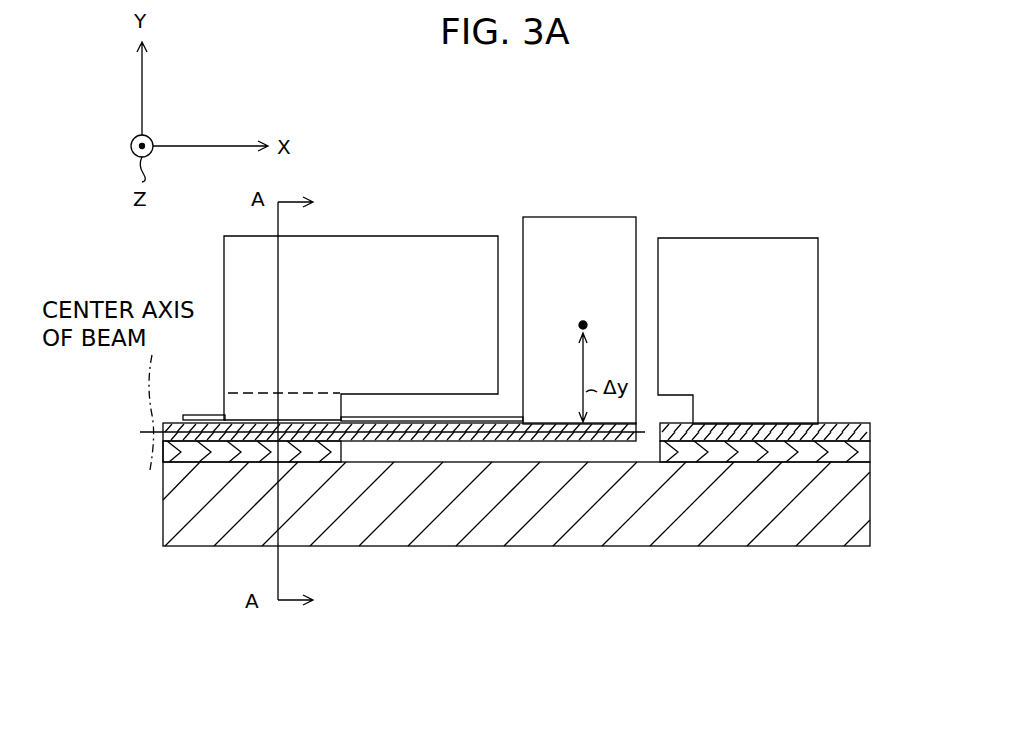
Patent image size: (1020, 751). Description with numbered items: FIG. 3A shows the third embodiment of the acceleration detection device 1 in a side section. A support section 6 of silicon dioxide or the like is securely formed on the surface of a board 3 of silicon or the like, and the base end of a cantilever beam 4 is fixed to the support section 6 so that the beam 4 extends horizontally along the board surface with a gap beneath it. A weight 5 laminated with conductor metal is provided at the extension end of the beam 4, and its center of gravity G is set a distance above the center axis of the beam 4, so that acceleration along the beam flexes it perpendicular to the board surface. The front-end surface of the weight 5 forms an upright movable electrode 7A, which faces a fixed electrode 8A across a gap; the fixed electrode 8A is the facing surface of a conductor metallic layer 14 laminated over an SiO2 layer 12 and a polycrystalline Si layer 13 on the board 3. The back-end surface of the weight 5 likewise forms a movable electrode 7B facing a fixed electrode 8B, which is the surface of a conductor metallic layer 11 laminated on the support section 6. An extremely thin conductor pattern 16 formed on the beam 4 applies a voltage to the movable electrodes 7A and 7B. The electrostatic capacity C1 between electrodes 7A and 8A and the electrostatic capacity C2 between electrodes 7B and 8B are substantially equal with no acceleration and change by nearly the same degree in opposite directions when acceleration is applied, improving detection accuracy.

The acceleration detection device 1 is at (351, 117).
The board 3 is at (592, 530).
The beam 4 is at (405, 442).
The weight 5 is at (577, 228).
The support section 6 is at (166, 446).
The movable electrode 7A is at (640, 262).
The movable electrode 7B is at (516, 228).
The fixed electrode 8A is at (653, 255).
The fixed electrode 8B is at (505, 220).
The conductor metallic layer 11 is at (379, 238).
The SiO2 layer 12 is at (862, 452).
The polycrystalline Si layer 13 is at (850, 425).
The conductor metallic layer 14 is at (803, 381).
The conductor pattern 16 is at (212, 415).
The electrostatic capacity C1 is at (648, 250).
The electrostatic capacity C2 is at (508, 270).
The center of gravity G is at (582, 320).